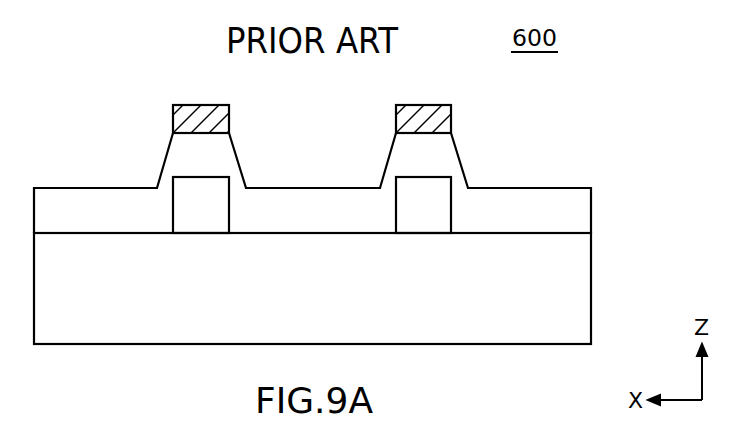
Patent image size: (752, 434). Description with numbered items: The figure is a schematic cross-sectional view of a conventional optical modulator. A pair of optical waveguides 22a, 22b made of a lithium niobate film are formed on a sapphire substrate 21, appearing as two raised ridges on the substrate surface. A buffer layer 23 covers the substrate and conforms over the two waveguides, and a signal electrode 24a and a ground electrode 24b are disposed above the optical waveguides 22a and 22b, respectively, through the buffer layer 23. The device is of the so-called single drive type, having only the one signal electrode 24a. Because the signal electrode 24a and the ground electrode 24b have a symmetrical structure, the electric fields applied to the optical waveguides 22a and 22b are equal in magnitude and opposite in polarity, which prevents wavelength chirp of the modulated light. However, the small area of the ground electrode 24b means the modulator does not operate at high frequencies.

The sapphire substrate 21 is at (591, 287).
The optical waveguide 22a is at (229, 203).
The optical waveguide 22b is at (451, 203).
The buffer layer 23 is at (591, 212).
The signal electrode 24a is at (229, 120).
The ground electrode 24b is at (451, 120).